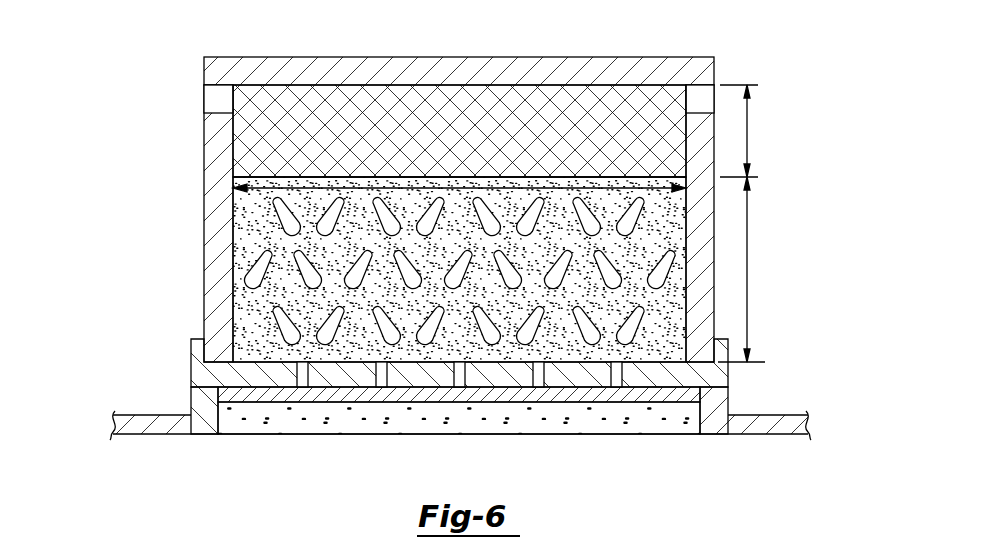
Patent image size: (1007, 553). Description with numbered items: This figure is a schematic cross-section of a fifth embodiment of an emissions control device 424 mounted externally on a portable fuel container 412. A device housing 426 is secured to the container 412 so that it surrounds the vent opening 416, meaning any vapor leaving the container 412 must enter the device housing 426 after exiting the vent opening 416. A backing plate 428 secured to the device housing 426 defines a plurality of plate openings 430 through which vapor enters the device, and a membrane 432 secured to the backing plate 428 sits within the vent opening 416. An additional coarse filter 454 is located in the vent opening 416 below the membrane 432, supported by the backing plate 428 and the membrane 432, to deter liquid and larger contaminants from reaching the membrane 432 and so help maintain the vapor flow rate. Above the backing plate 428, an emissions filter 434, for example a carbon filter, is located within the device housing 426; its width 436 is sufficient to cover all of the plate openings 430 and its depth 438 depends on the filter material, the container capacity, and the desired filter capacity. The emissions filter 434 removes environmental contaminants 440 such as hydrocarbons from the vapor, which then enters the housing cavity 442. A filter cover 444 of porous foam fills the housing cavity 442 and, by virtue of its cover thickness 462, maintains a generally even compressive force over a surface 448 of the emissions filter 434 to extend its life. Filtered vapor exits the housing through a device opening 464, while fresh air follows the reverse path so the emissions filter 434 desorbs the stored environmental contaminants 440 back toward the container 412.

The emissions control device 424 is at (128, 49).
The filter cover 444 is at (628, 98).
The housing cavity 442 is at (461, 146).
The surface of the emissions filter 448 is at (314, 182).
The width of the emissions filter 436 is at (277, 193).
The environmental contaminants 440 is at (263, 255).
The device housing 426 is at (210, 297).
The device opening 464 is at (219, 103).
The cover thickness 462 is at (747, 137).
The depth of the emissions filter 438 is at (747, 258).
The emissions filter 434 is at (407, 355).
The backing plate 428 is at (660, 378).
The plate openings 430 is at (540, 380).
The membrane 432 is at (337, 397).
The coarse filter 454 is at (292, 417).
The vent opening 416 is at (219, 417).
The container 412 is at (155, 420).